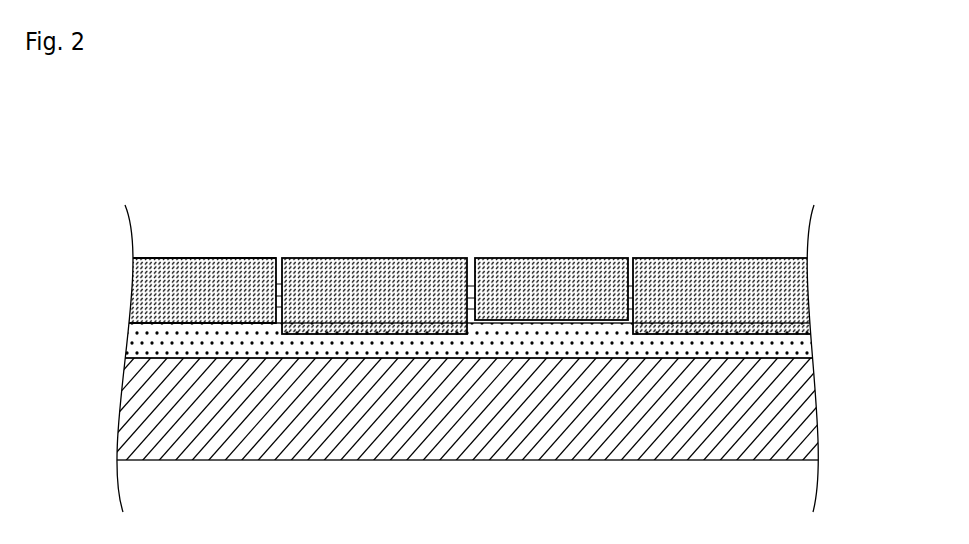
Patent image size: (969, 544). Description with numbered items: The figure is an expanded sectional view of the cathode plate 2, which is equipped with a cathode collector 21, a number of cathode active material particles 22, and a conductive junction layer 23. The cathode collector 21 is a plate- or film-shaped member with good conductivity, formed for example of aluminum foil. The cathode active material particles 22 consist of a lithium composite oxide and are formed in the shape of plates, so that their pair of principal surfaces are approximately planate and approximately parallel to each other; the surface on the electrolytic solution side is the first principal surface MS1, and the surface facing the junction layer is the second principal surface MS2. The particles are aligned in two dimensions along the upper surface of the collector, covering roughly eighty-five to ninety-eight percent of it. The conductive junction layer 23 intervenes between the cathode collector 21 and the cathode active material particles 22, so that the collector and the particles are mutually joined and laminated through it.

The cathode plate 2 is at (857, 112).
The cathode collector 21 is at (122, 445).
The cathode active material particles 22 is at (171, 262).
The conductive junction layer 23 is at (801, 347).
The first principal surface MS1 is at (277, 238).
The second principal surface MS2 is at (148, 324).